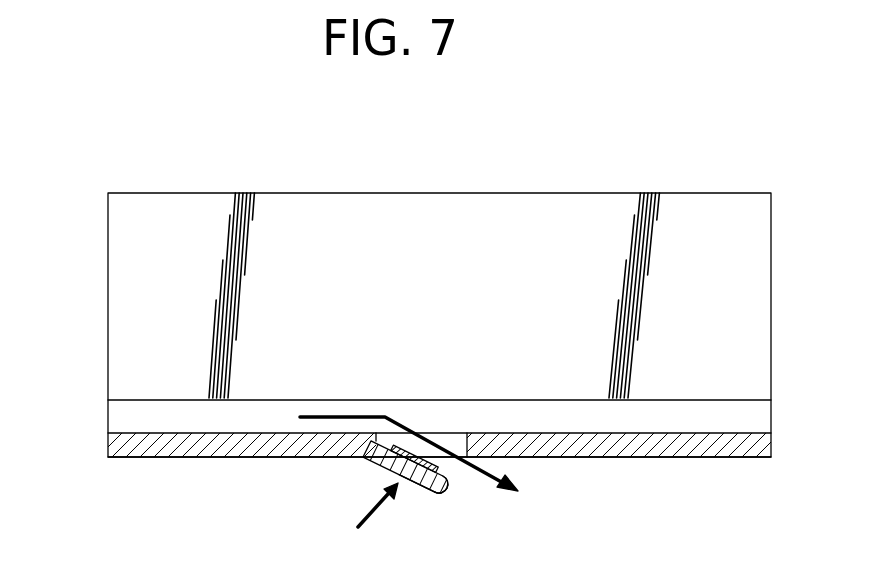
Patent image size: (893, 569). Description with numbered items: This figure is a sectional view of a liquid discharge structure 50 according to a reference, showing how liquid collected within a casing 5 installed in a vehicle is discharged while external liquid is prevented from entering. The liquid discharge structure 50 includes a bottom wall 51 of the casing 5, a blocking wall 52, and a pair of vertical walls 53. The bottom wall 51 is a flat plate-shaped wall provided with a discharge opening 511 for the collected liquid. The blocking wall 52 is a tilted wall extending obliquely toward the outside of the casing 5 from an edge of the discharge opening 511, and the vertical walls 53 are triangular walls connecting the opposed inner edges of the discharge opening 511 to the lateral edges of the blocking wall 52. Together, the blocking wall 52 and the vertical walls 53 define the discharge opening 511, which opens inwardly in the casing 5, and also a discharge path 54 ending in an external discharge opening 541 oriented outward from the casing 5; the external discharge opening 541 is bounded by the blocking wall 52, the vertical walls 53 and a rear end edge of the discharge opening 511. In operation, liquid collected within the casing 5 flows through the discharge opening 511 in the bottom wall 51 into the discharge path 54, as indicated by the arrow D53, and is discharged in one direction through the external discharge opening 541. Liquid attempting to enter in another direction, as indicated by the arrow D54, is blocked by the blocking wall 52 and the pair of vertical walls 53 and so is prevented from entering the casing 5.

The casing 5 is at (445, 178).
The liquid discharge structure 50 is at (142, 464).
The bottom wall 51 is at (722, 458).
The discharge opening 511 is at (454, 434).
The blocking wall 52 is at (370, 463).
The vertical walls 53 is at (429, 446).
The discharge path 54 is at (419, 488).
The external discharge opening 541 is at (458, 478).
The arrow D53 is at (339, 415).
The arrow D54 is at (372, 505).